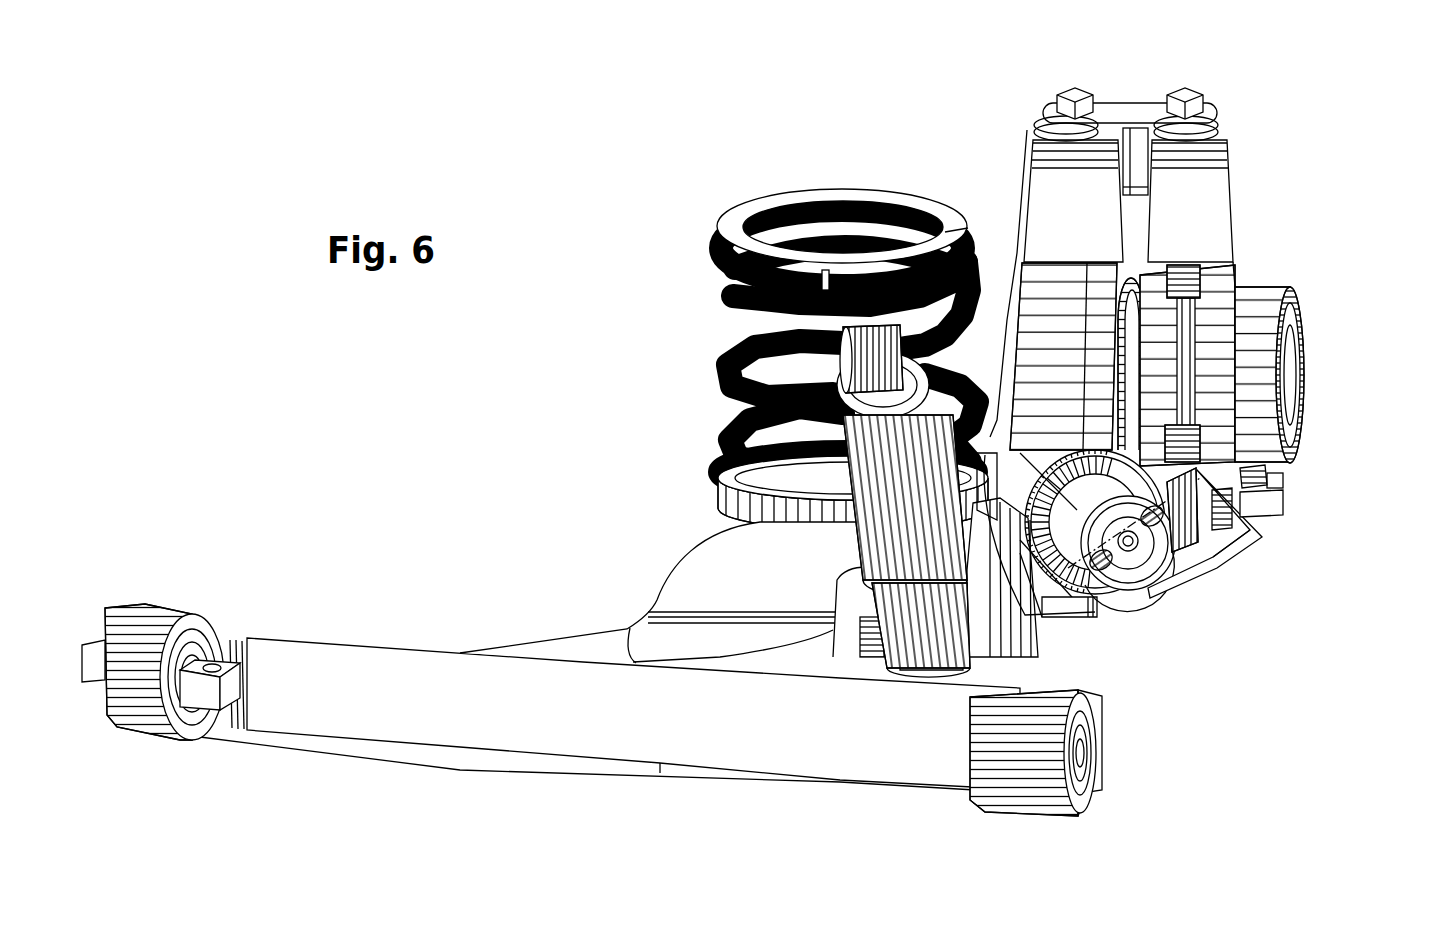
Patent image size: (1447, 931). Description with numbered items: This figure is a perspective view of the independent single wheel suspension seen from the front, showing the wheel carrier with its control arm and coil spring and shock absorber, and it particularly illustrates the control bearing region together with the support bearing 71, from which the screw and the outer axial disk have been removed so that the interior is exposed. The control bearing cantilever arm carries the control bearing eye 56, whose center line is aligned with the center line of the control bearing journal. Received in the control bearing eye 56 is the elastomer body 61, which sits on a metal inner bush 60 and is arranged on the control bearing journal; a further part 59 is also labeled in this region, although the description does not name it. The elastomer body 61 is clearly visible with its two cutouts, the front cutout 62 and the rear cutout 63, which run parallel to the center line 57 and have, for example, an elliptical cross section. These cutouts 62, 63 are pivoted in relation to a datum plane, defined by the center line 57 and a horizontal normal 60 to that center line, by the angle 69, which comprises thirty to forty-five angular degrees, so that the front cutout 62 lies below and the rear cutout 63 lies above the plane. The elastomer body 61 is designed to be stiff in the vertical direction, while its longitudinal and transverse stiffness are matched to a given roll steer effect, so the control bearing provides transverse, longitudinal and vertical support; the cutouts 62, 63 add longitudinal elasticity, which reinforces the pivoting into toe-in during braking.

The support bearing 71 is at (1058, 447).
The angle 69 is at (1288, 482).
The wheel bearing 59 is at (1261, 522).
The rear cutout 63 is at (1254, 523).
The elastomer body 61 is at (1158, 550).
The center line 57 is at (1190, 587).
The front cutout 62 is at (1100, 570).
The control bearing eye 56 is at (1132, 592).
The inner bush 60 is at (1160, 562).